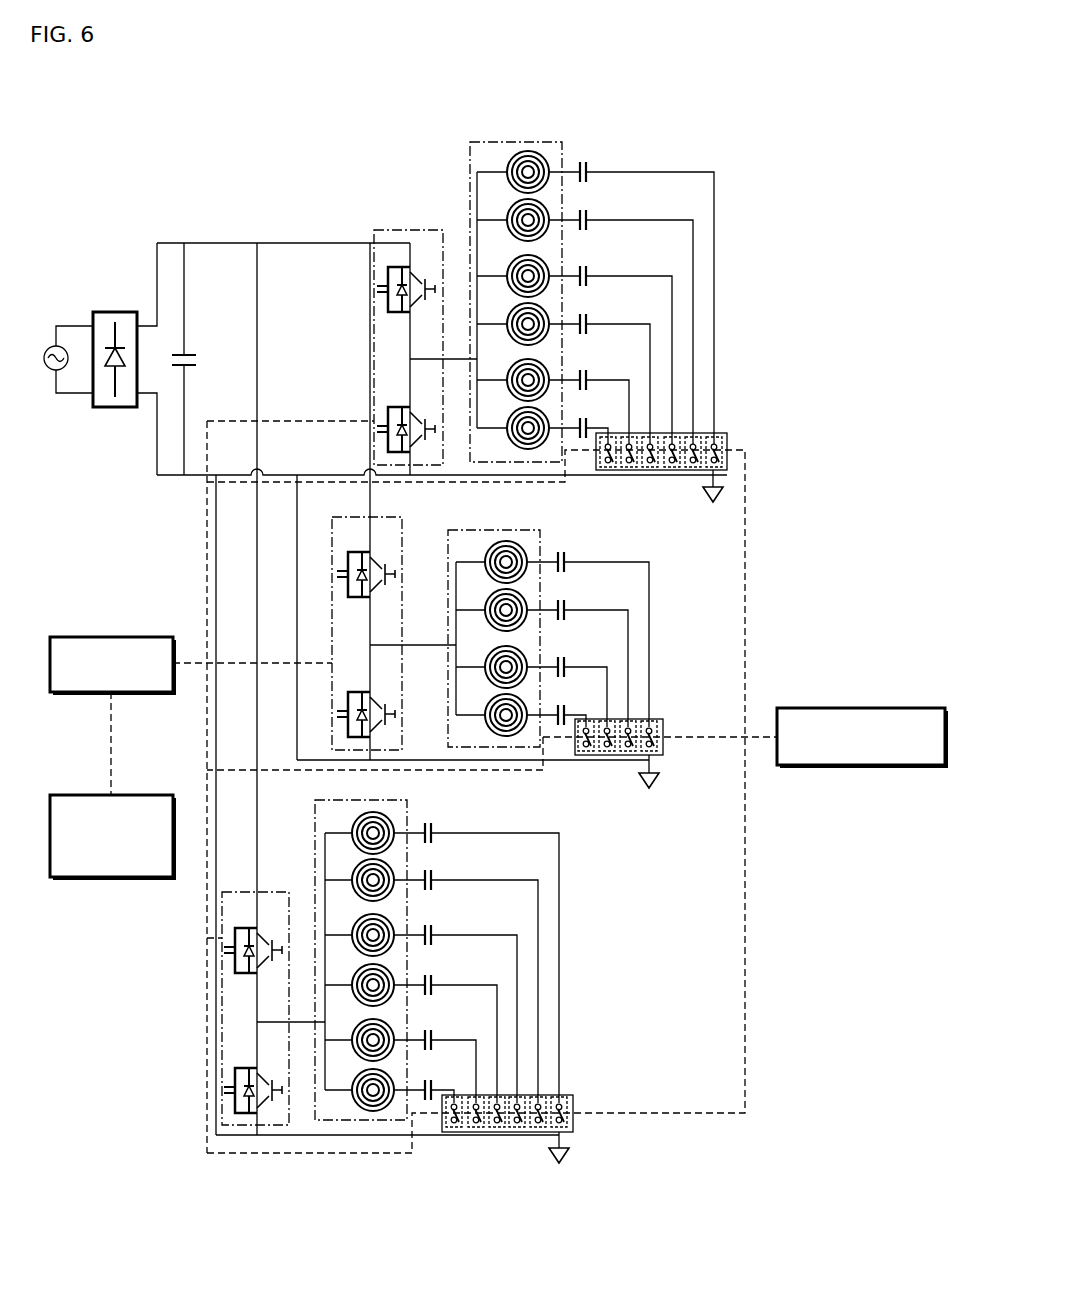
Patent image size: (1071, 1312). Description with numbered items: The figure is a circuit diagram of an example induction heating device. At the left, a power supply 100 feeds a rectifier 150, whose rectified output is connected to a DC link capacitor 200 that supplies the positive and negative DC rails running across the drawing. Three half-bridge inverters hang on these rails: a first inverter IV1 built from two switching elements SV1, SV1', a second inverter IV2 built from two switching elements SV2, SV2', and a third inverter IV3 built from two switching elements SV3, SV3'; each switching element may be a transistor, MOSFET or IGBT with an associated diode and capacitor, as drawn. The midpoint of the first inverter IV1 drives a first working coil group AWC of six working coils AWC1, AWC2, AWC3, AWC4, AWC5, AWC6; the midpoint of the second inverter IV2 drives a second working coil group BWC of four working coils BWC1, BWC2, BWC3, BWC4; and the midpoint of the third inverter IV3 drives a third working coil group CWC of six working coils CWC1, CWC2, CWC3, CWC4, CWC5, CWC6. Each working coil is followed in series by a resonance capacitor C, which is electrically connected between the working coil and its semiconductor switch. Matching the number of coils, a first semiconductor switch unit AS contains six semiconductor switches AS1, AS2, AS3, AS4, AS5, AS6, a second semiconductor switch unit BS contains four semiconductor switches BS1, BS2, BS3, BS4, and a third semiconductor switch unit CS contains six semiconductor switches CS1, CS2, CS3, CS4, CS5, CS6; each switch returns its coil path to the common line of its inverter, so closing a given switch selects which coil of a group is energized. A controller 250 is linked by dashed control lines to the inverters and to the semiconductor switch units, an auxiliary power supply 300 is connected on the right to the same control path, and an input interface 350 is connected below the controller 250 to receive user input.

The power supply 100 is at (56, 346).
The rectifier 150 is at (115, 312).
The DC link capacitor 200 is at (186, 350).
The controller 250 is at (111, 637).
The auxiliary power supply 300 is at (862, 708).
The input interface 350 is at (111, 877).
The first inverter IV1 is at (392, 317).
The second inverter IV2 is at (308, 635).
The third inverter IV3 is at (239, 1008).
The switching element SV1 is at (376, 291).
The switching element SV1' is at (371, 432).
The switching element SV2 is at (279, 586).
The switching element SV2' is at (277, 726).
The switching element SV3 is at (222, 953).
The switching element SV3' is at (218, 1094).
The first working coil group AWC is at (592, 268).
The working coil AWC1 is at (545, 162).
The working coil AWC2 is at (545, 210).
The working coil AWC3 is at (545, 266).
The working coil AWC4 is at (545, 314).
The working coil AWC5 is at (545, 370).
The working coil AWC6 is at (545, 418).
The resonance capacitor C is at (590, 172).
The first semiconductor switch unit AS is at (680, 451).
The semiconductor switch AS1 is at (718, 438).
The semiconductor switch AS2 is at (697, 438).
The semiconductor switch AS3 is at (672, 467).
The semiconductor switch AS4 is at (650, 467).
The semiconductor switch AS5 is at (629, 467).
The semiconductor switch AS6 is at (608, 467).
The second working coil group BWC is at (553, 614).
The working coil BWC1 is at (525, 556).
The working coil BWC2 is at (525, 598).
The working coil BWC3 is at (525, 658).
The working coil BWC4 is at (525, 710).
The second semiconductor switch unit BS is at (654, 739).
The semiconductor switch BS1 is at (652, 722).
The semiconductor switch BS2 is at (632, 722).
The semiconductor switch BS3 is at (607, 758).
The semiconductor switch BS4 is at (586, 758).
The third working coil group CWC is at (437, 948).
The working coil CWC1 is at (393, 823).
The working coil CWC2 is at (393, 872).
The working coil CWC3 is at (393, 928).
The working coil CWC4 is at (393, 978).
The working coil CWC5 is at (393, 1033).
The working coil CWC6 is at (393, 1083).
The third semiconductor switch unit CS is at (523, 1112).
The semiconductor switch CS1 is at (562, 1100).
The semiconductor switch CS2 is at (541, 1100).
The semiconductor switch CS3 is at (517, 1130).
The semiconductor switch CS4 is at (497, 1130).
The semiconductor switch CS5 is at (476, 1130).
The semiconductor switch CS6 is at (454, 1130).